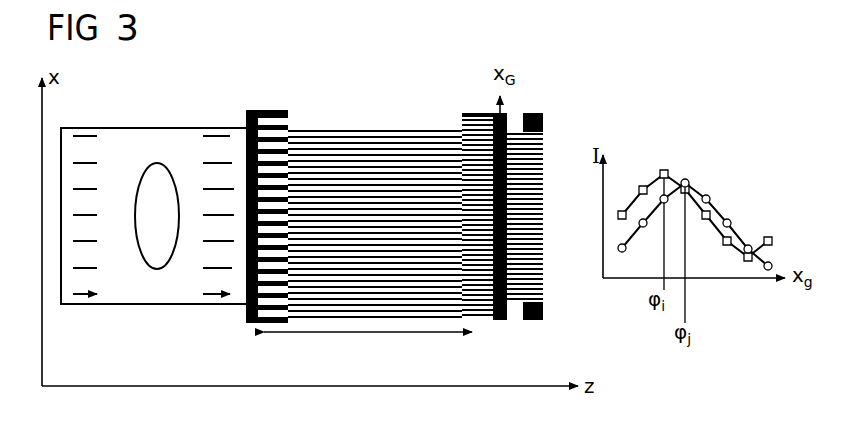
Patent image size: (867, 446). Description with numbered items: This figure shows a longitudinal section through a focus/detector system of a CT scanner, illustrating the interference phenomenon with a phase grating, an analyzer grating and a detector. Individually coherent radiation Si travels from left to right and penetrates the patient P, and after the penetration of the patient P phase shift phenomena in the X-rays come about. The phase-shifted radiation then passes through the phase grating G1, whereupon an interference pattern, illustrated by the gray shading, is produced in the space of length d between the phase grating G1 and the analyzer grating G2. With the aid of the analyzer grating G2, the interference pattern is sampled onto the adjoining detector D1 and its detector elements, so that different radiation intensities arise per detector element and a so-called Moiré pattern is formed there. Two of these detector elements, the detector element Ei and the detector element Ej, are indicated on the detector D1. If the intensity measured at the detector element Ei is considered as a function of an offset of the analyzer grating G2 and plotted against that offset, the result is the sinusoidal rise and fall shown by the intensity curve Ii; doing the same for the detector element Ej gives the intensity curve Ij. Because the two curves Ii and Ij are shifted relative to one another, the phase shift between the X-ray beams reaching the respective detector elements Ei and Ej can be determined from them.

The individually coherent radiation source Si is at (76, 134).
The patient P is at (156, 162).
The phase grating G1 is at (260, 110).
The analyzer grating G2 is at (462, 112).
The detector D1 is at (550, 175).
The detector element i Ei is at (543, 143).
The detector element j Ej is at (543, 245).
The distance between phase grating and analyzer grating d is at (358, 335).
The intensity curve I(Ei(xG)) Ii is at (651, 178).
The intensity curve I(Ej(xG)) Ij is at (702, 193).